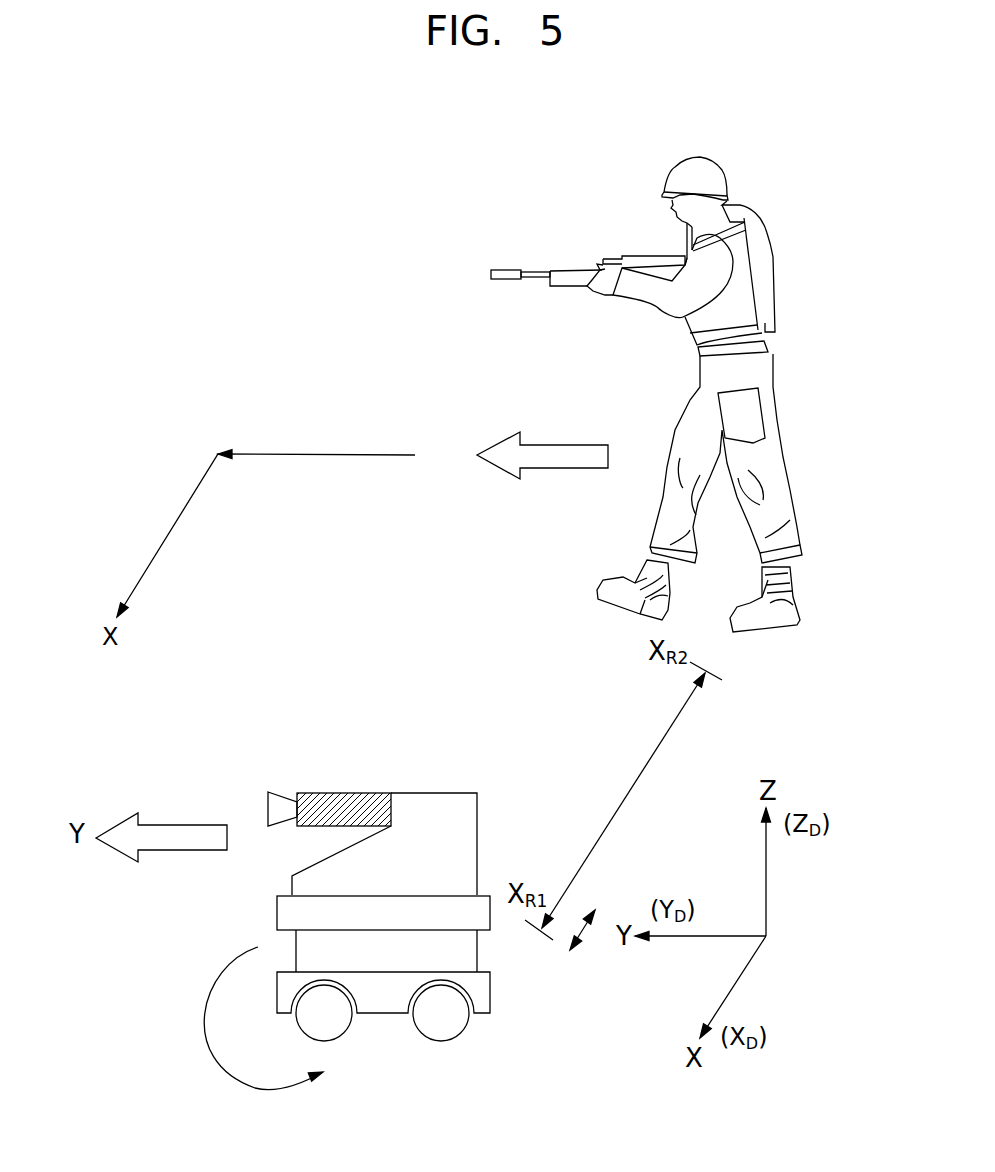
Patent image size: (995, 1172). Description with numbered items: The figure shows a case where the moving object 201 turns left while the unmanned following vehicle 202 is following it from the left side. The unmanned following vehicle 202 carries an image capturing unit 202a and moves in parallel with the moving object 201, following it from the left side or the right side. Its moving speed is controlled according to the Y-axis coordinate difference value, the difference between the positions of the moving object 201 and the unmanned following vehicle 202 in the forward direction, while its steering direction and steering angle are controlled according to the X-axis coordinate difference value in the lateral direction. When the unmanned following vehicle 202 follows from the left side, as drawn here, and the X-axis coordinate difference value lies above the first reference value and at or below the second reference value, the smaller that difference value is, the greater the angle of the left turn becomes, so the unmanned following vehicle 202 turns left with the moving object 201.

The moving object 201 is at (725, 172).
The unmanned following vehicle 202 is at (453, 805).
The image capturing unit 202a is at (320, 793).